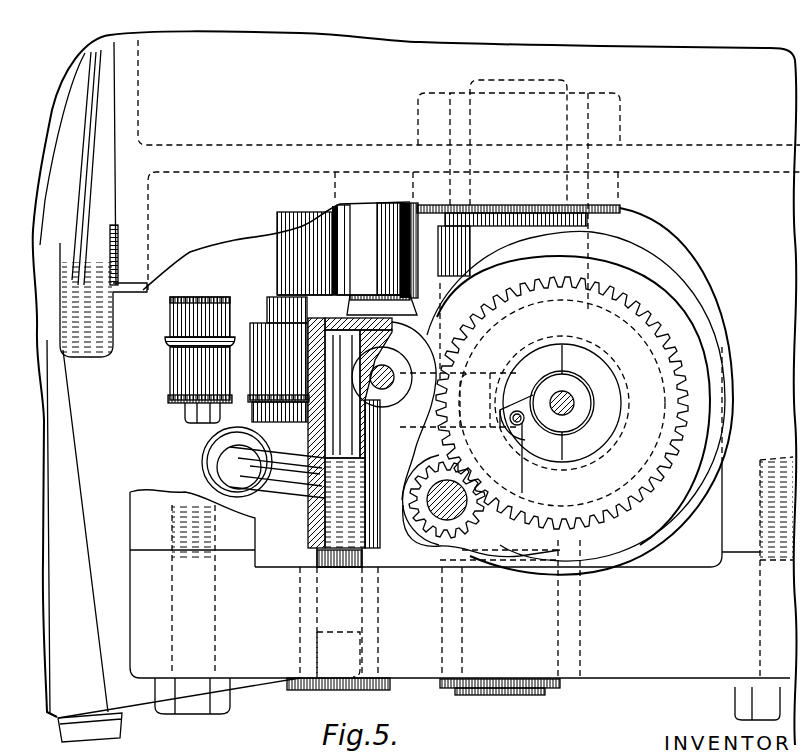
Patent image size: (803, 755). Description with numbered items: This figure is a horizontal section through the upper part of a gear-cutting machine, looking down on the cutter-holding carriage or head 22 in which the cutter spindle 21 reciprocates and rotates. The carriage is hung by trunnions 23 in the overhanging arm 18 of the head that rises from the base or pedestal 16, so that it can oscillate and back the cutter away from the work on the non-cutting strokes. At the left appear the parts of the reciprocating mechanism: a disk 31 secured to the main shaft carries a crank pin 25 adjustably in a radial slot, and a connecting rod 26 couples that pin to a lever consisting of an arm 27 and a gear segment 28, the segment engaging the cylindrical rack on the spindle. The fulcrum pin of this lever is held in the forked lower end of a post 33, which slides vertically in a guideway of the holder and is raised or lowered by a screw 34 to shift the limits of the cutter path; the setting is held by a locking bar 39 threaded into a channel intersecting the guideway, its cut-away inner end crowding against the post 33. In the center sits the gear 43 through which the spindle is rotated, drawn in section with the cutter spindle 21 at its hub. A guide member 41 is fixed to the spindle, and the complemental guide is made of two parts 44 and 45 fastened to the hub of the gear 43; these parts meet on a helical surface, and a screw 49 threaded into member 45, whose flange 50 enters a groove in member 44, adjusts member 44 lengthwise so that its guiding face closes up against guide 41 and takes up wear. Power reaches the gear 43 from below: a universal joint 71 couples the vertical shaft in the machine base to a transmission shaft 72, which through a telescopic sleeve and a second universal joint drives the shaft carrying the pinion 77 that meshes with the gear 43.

The base or pedestal 16 is at (453, 513).
The overhanging arm 18 is at (733, 535).
The cutter spindle 21 is at (580, 405).
The cutter-holding carriage or head 22 is at (413, 297).
The trunnions 23 is at (560, 80).
The crank pin 25 is at (206, 418).
The connecting rod 26 is at (218, 368).
The lever arm 27 is at (297, 412).
The gear segment 28 is at (502, 439).
The disk 31 is at (185, 325).
The post 33 is at (310, 375).
The screw 34 is at (418, 345).
The locking bar 39 is at (318, 492).
The guide member 41 is at (602, 418).
The gear 43 is at (555, 520).
The guide member 44 is at (533, 367).
The guide member 45 is at (535, 443).
The screw 49 is at (517, 430).
The flange 50 is at (522, 470).
The universal joint 71 is at (215, 463).
The transmission shaft 72 is at (292, 480).
The pinion 77 is at (453, 530).